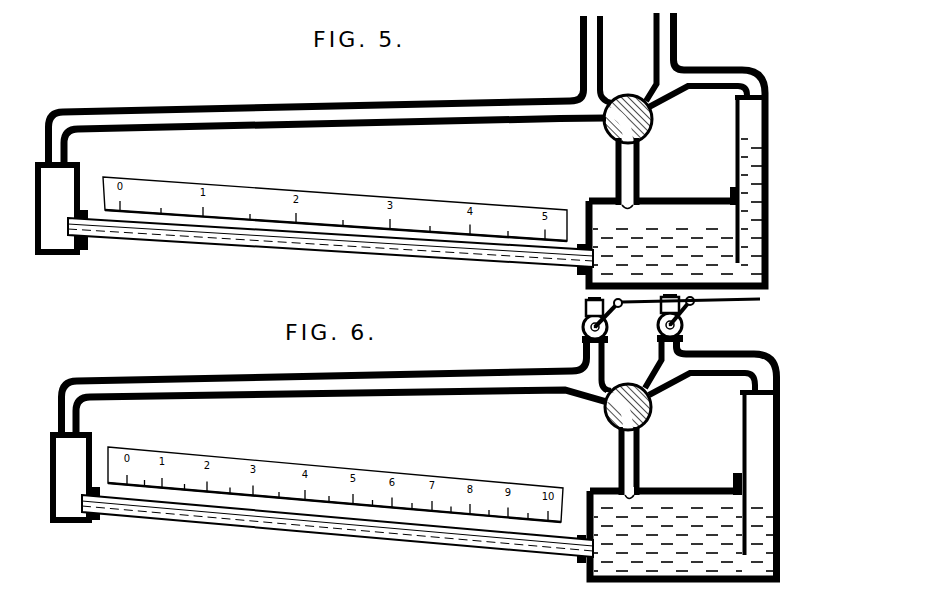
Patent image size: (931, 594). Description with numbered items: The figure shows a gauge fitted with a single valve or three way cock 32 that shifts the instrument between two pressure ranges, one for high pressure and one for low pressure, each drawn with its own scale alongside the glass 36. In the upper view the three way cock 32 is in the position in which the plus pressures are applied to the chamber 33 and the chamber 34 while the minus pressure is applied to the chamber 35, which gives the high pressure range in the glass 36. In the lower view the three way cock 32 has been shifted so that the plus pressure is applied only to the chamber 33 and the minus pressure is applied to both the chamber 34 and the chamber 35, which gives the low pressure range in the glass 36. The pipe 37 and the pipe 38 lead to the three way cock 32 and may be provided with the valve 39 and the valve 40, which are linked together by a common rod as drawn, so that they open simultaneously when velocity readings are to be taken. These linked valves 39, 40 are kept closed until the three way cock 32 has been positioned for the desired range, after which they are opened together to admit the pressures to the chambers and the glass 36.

In FIG. 5, the three way cock 32 is at (610, 131).
In FIG. 6, the three way cock 32 is at (610, 415).
In FIG. 5, the chamber 33 is at (78, 173).
In FIG. 6, the chamber 33 is at (78, 453).
In FIG. 5, the chamber 34 is at (683, 210).
In FIG. 6, the chamber 34 is at (683, 498).
In FIG. 5, the chamber 35 is at (748, 155).
In FIG. 6, the chamber 35 is at (762, 435).
In FIG. 5, the glass 36 is at (207, 235).
In FIG. 6, the glass 36 is at (265, 520).
In FIG. 6, the pipe 37 is at (585, 305).
In FIG. 6, the pipe 38 is at (683, 343).
In FIG. 6, the valve 39 is at (582, 330).
In FIG. 6, the valve 40 is at (660, 325).